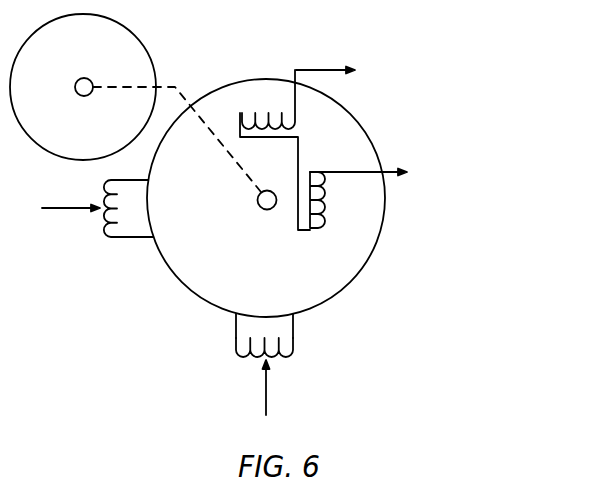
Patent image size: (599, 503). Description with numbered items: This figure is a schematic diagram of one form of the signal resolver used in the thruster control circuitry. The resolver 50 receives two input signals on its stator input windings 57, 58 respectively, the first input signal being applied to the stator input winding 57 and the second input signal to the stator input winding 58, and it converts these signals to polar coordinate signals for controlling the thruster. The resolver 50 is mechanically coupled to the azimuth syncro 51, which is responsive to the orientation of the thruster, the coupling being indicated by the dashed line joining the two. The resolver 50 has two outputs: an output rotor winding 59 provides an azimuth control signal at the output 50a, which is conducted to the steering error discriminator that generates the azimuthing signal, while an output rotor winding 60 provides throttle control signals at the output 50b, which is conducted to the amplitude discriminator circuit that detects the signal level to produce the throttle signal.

The azimuth syncro 51 is at (142, 73).
The resolver 50 is at (331, 281).
The output rotor winding 60 is at (247, 113).
The output rotor winding 59 is at (325, 206).
The stator input winding 58 is at (294, 347).
The stator input winding 57 is at (113, 233).
The output 50a is at (389, 170).
The output 50b is at (321, 70).